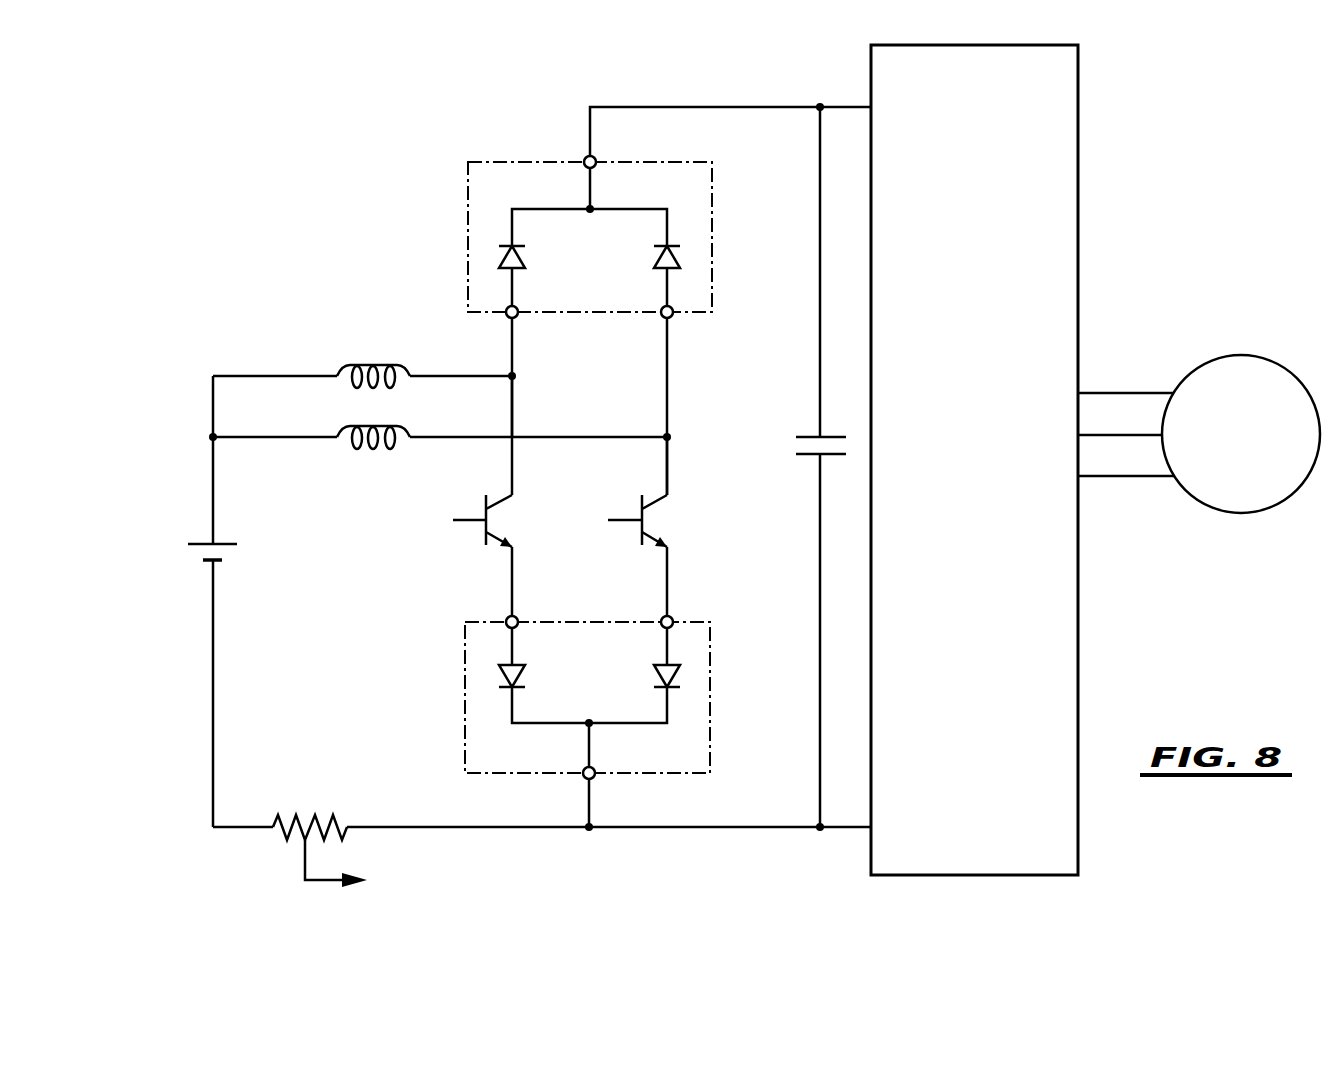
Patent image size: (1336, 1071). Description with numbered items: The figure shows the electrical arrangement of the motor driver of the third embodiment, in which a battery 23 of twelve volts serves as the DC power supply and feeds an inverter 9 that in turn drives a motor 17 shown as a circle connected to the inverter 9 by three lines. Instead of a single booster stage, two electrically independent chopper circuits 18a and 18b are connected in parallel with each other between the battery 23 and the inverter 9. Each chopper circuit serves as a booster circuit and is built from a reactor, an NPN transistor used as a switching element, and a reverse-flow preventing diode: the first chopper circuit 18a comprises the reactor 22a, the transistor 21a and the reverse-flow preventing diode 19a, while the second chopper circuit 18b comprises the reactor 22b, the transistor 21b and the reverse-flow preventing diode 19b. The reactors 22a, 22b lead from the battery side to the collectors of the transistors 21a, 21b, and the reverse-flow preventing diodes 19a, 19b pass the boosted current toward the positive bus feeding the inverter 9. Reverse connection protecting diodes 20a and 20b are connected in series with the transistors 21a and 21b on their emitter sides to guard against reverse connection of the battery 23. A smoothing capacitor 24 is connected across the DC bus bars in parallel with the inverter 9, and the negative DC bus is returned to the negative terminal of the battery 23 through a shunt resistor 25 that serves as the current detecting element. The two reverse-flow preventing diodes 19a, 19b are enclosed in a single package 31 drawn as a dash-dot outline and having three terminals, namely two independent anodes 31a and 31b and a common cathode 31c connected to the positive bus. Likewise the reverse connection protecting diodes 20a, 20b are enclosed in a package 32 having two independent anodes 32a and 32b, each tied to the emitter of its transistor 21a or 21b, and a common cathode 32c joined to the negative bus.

The inverter 9 is at (1092, 208).
The motor 17 is at (1196, 370).
The chopper circuit 18a is at (492, 345).
The chopper circuit 18b is at (680, 402).
The reverse-flow preventing diode 19a is at (498, 252).
The reverse-flow preventing diode 19b is at (682, 256).
The reverse connection protecting diode 20a is at (498, 677).
The reverse connection protecting diode 20b is at (682, 678).
The transistor 21a is at (475, 532).
The transistor 21b is at (668, 520).
The reactor 22a is at (355, 366).
The reactor 22b is at (372, 447).
The battery 23 is at (204, 555).
The smoothing capacitor 24 is at (792, 448).
The shunt resistor 25 is at (316, 812).
The package 31 is at (526, 160).
The anode 31a is at (517, 318).
The anode 31b is at (661, 318).
The common cathode 31c is at (597, 158).
The package 32 is at (710, 775).
The anode 32a is at (516, 617).
The anode 32b is at (662, 628).
The common cathode 32c is at (585, 779).